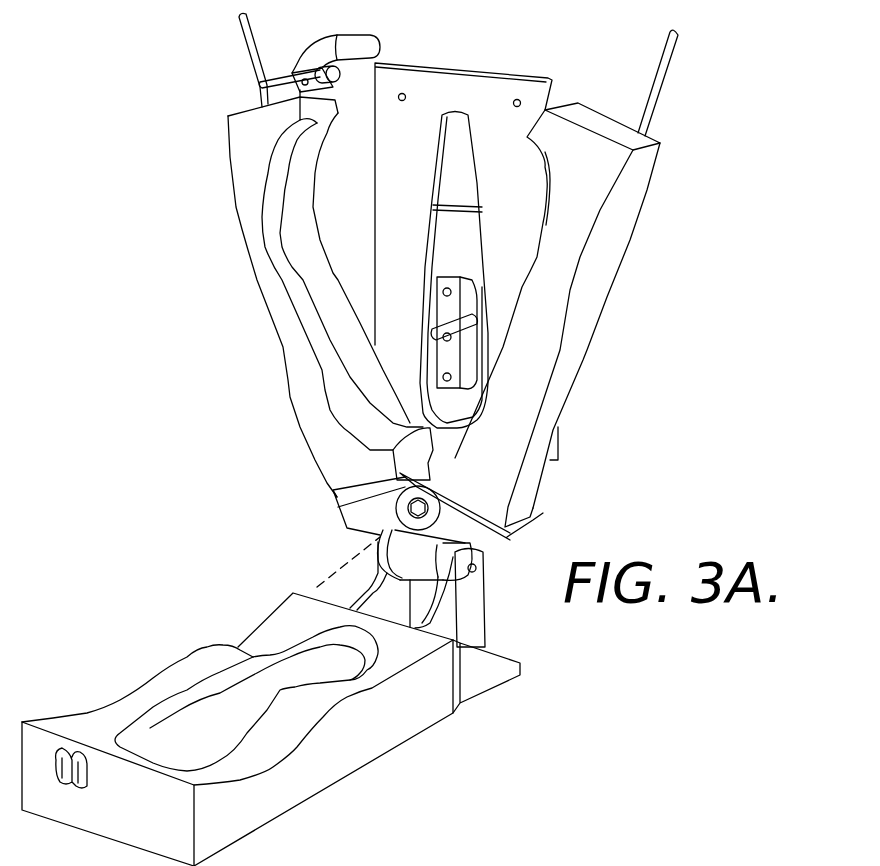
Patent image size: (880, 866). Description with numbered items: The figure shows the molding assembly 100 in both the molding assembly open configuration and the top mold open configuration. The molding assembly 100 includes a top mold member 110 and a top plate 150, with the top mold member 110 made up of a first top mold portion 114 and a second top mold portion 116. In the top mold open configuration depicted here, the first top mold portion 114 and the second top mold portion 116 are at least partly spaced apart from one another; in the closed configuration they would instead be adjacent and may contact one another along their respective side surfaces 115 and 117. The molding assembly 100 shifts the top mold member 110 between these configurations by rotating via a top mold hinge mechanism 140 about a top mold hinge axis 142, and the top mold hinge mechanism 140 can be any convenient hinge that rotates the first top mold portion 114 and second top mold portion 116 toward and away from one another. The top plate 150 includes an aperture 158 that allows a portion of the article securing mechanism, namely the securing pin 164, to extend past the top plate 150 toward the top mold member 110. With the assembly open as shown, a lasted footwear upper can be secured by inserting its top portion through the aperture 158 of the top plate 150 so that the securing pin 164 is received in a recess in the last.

The molding assembly 100 is at (117, 303).
The top mold member 110 is at (550, 483).
The first top mold portion 114 is at (240, 135).
The side surface 115 is at (323, 102).
The second top mold portion 116 is at (637, 190).
The side surface 117 is at (583, 83).
The top mold hinge mechanism 140 is at (345, 525).
The top mold hinge axis 142 is at (338, 568).
The top plate 150 is at (520, 68).
The aperture 158 is at (458, 130).
The securing pin 164 is at (470, 312).